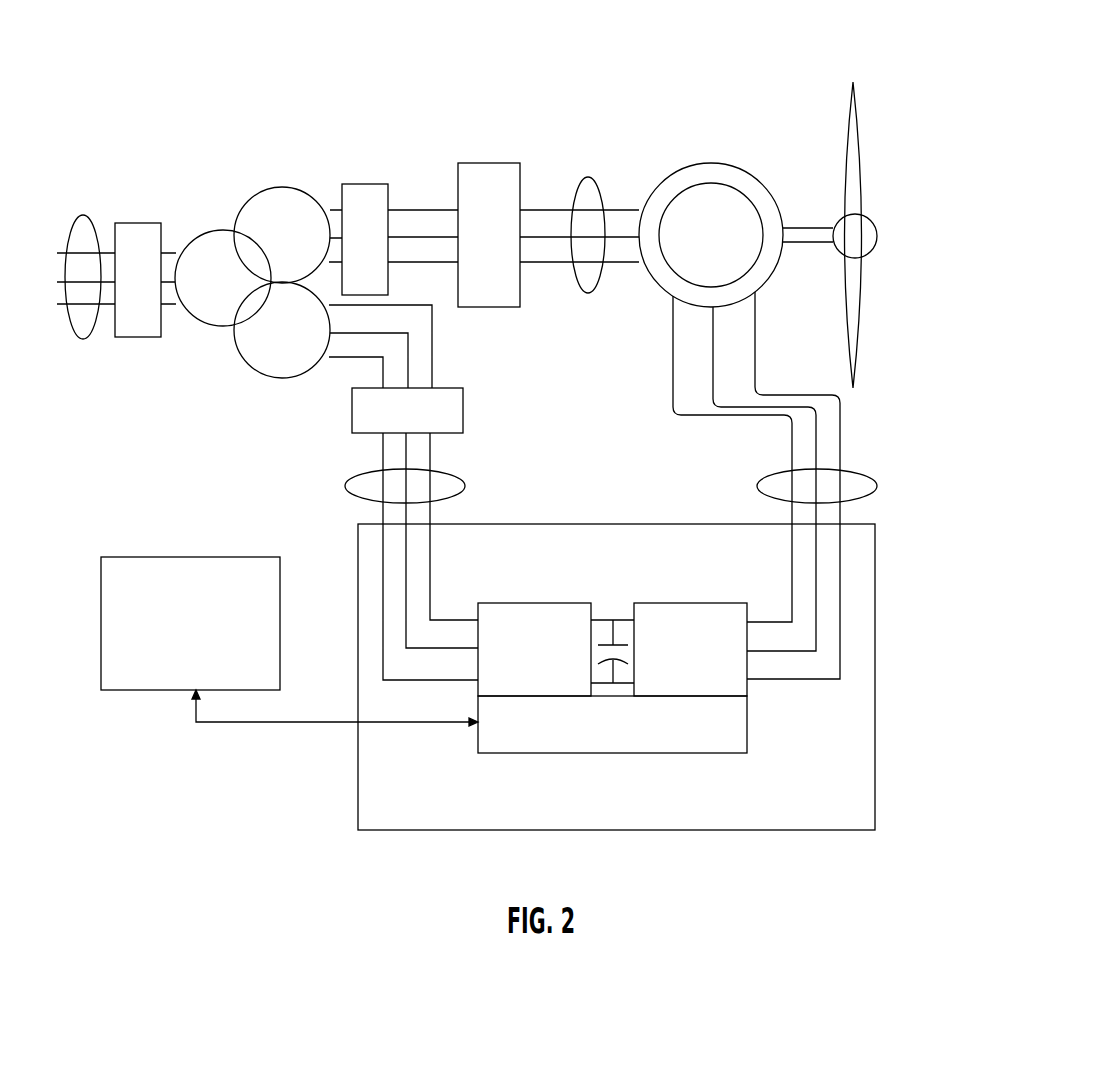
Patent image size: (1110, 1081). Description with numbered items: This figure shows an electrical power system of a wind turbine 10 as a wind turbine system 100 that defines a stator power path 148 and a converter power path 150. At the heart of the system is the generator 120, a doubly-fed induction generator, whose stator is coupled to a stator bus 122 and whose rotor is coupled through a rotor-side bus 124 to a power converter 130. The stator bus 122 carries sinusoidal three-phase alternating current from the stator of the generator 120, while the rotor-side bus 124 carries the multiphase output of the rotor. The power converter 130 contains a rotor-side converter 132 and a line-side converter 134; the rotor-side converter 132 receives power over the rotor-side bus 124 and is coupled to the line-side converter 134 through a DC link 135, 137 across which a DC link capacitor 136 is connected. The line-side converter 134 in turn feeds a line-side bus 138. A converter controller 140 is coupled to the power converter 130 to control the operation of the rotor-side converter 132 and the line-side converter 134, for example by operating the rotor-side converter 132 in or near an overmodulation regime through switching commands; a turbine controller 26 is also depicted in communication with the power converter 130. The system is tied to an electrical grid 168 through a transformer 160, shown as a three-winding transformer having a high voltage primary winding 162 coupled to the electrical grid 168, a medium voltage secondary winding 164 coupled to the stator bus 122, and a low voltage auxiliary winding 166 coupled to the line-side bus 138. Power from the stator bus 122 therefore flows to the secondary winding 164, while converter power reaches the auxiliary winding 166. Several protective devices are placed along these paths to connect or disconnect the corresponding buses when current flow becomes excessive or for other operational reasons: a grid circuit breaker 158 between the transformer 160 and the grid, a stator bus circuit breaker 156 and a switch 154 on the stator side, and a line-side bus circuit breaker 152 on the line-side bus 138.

The wind turbine rotor 10 is at (875, 95).
The turbine controller 26 is at (252, 557).
The wind turbine system 100 is at (758, 204).
The generator 120 is at (709, 163).
The stator bus 122 is at (586, 178).
The rotor-side bus 124 is at (758, 486).
The power converter 130 is at (574, 698).
The rotor-side converter 132 is at (707, 661).
The line-side converter 134 is at (550, 661).
The DC link 135 is at (622, 620).
The DC link capacitor 136 is at (608, 645).
The DC link 137 is at (630, 677).
The line-side bus 138 is at (465, 486).
The converter controller 140 is at (630, 737).
The stator power path 148 is at (579, 167).
The converter power path 150 is at (824, 485).
The line-side bus circuit breaker 152 is at (463, 413).
The switch 154 is at (488, 163).
The stator bus circuit breaker 156 is at (366, 184).
The grid circuit breaker 158 is at (135, 223).
The transformer 160 is at (303, 259).
The primary winding 162 is at (200, 232).
The secondary winding 164 is at (282, 187).
The auxiliary winding 166 is at (282, 378).
The electrical grid 168 is at (83, 215).